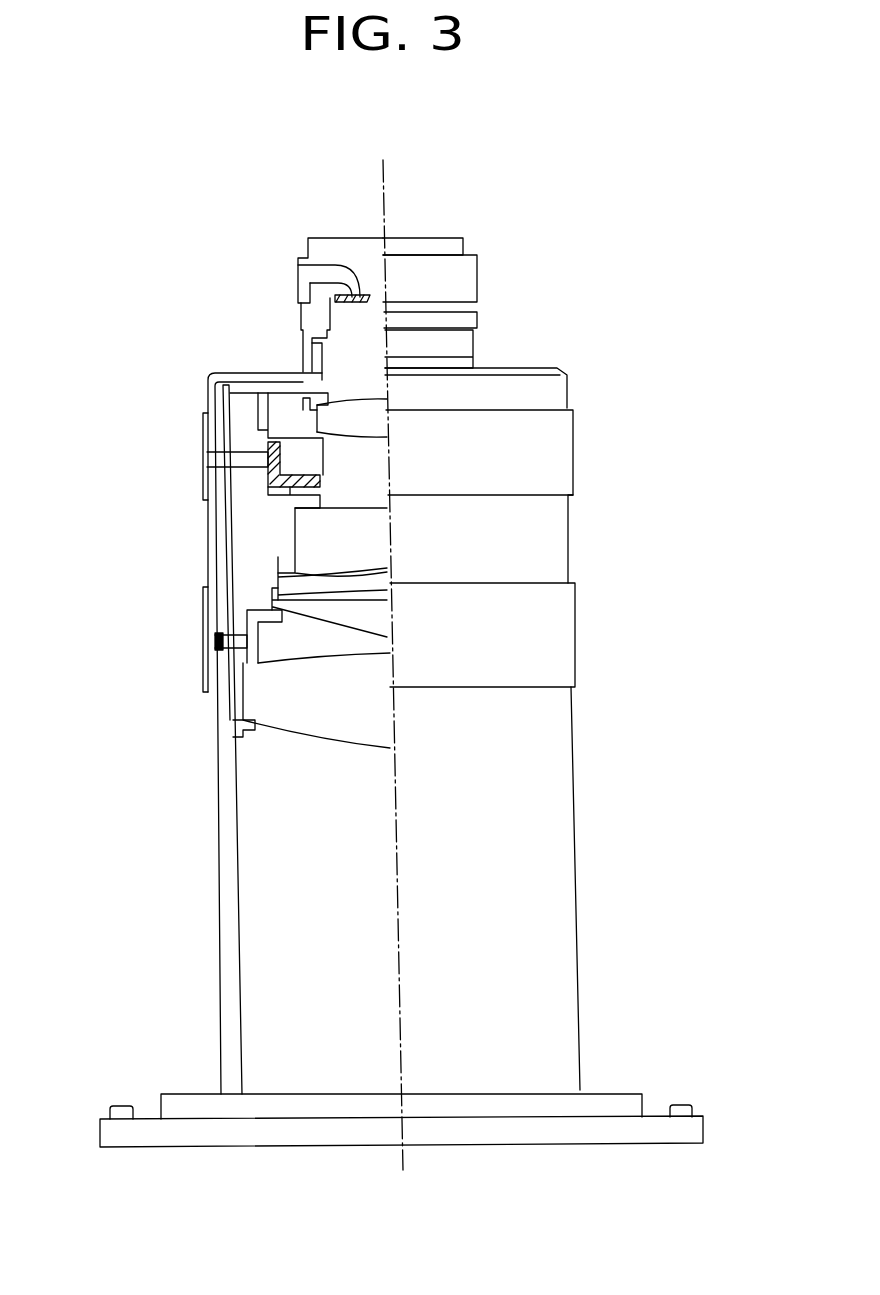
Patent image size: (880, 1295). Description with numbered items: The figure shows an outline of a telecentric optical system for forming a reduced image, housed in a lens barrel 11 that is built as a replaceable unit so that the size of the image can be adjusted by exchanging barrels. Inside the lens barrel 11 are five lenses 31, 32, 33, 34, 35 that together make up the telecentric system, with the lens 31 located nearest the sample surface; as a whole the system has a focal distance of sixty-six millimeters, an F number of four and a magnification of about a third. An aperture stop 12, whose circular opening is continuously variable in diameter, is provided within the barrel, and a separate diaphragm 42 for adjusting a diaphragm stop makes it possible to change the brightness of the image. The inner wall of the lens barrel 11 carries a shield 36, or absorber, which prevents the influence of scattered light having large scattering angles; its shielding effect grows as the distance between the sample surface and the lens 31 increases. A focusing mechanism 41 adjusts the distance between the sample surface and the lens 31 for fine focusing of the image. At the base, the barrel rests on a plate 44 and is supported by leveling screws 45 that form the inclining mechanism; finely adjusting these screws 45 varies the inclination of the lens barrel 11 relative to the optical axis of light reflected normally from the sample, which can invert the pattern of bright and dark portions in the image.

The lens barrel 11 is at (582, 324).
The aperture stop 12 is at (298, 266).
The lens 31 is at (290, 735).
The lens 32 is at (272, 603).
The lens 33 is at (278, 580).
The lens 34 is at (295, 535).
The lens 35 is at (310, 425).
The shield 36 is at (236, 885).
The focusing mechanism 41 is at (205, 655).
The diaphragm 42 is at (203, 467).
The base plate 44 is at (700, 1128).
The leveling screw 45 is at (122, 1104).